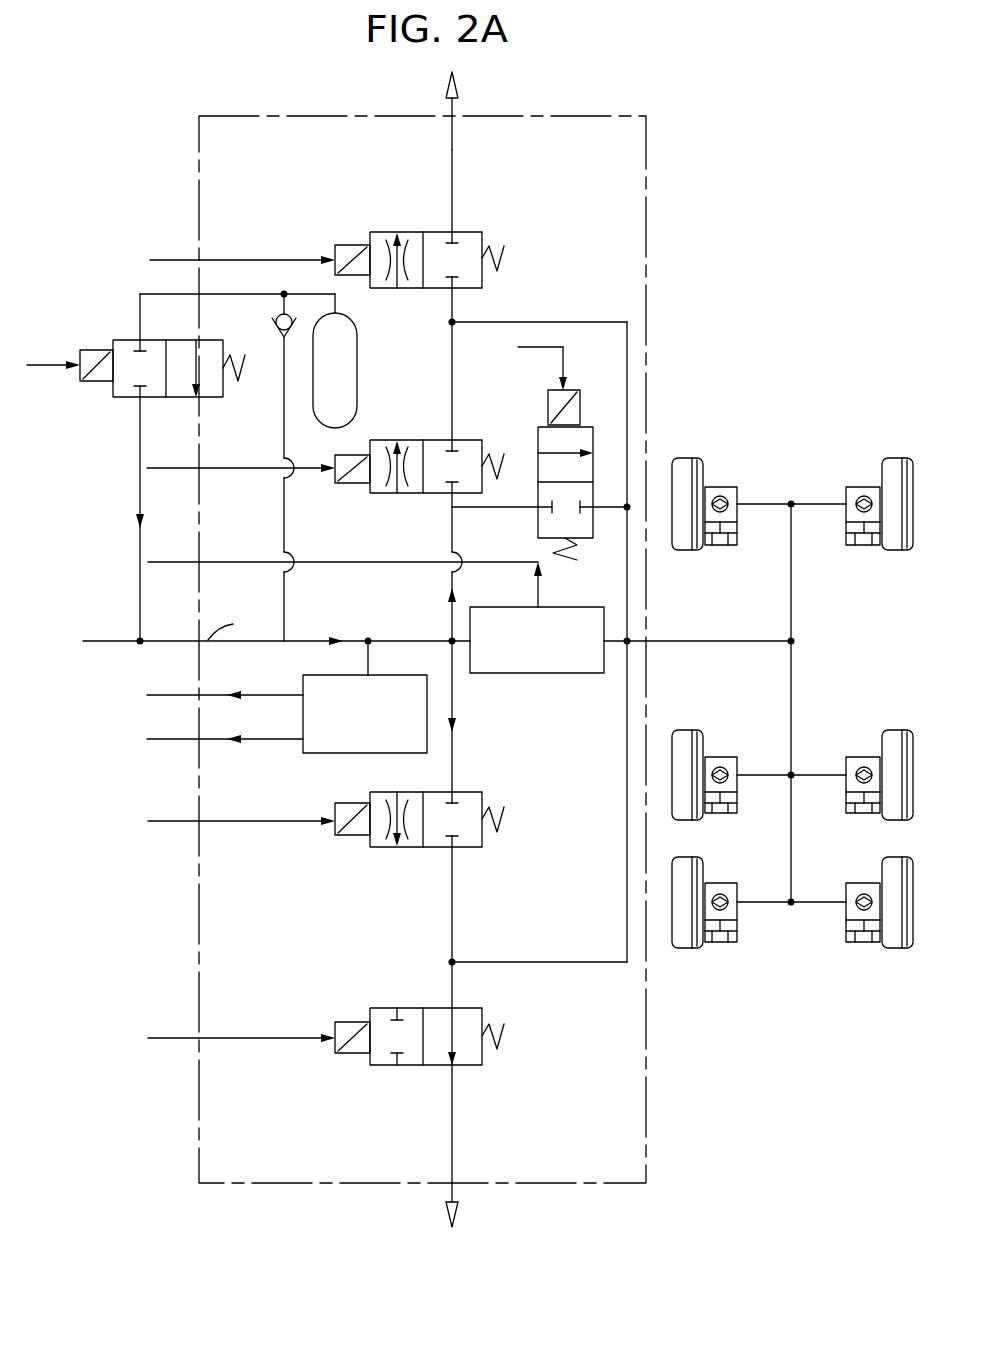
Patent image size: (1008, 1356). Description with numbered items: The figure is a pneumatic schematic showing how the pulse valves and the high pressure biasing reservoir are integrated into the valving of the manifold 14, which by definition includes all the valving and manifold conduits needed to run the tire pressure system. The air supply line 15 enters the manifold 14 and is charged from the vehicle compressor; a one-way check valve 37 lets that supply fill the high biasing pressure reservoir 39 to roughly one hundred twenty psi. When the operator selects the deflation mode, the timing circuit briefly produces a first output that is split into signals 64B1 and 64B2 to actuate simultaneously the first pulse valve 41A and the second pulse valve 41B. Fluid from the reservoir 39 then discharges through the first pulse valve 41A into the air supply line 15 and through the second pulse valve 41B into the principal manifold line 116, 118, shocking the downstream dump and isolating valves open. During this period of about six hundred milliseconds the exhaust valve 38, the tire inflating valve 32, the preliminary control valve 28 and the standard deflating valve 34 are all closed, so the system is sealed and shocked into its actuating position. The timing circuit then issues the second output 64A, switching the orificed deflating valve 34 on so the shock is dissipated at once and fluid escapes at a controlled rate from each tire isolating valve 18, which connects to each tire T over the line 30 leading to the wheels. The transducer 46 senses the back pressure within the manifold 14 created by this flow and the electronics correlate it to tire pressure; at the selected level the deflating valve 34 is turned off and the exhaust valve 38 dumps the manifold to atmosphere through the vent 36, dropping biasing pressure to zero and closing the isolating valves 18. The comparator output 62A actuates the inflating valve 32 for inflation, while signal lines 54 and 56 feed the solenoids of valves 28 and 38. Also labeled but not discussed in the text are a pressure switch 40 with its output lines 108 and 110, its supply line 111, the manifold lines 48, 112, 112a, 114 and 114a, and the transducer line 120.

The manifold 14 is at (655, 200).
The air supply line 15 is at (183, 637).
The tire isolating valve 18 is at (850, 478).
The preliminary control valve 28 is at (412, 848).
The tire air line 30 is at (791, 600).
The tire inflating valve 32 is at (462, 440).
The standard deflating valve 34 is at (400, 232).
The vent 36 is at (446, 88).
The one-way check valve 37 is at (270, 333).
The exhaust valve 38 is at (410, 1008).
The high biasing pressure reservoir 39 is at (356, 373).
The pressure switch 40 is at (338, 755).
The first pulse valve 41A is at (153, 398).
The second pulse valve 41B is at (538, 446).
The transducer 46 is at (562, 675).
The pilot line 48 is at (300, 560).
The control signal line 54 is at (245, 820).
The control signal line 56 is at (255, 1037).
The comparator output 62A is at (272, 457).
The second output 64A is at (265, 262).
The first output branch 64B1 is at (564, 352).
The first output branch 64B2 is at (38, 362).
The pressure switch output line 108 is at (177, 740).
The pressure switch output line 110 is at (177, 690).
The pressure switch supply line 111 is at (353, 628).
The air line 112 is at (452, 533).
The air line 112a is at (450, 180).
The air line 114 is at (452, 752).
The air line 114a is at (452, 1135).
The principal manifold line 116 is at (627, 402).
The principal manifold line 118 is at (633, 638).
The transducer sensing line 120 is at (616, 628).
The tire T is at (690, 458).